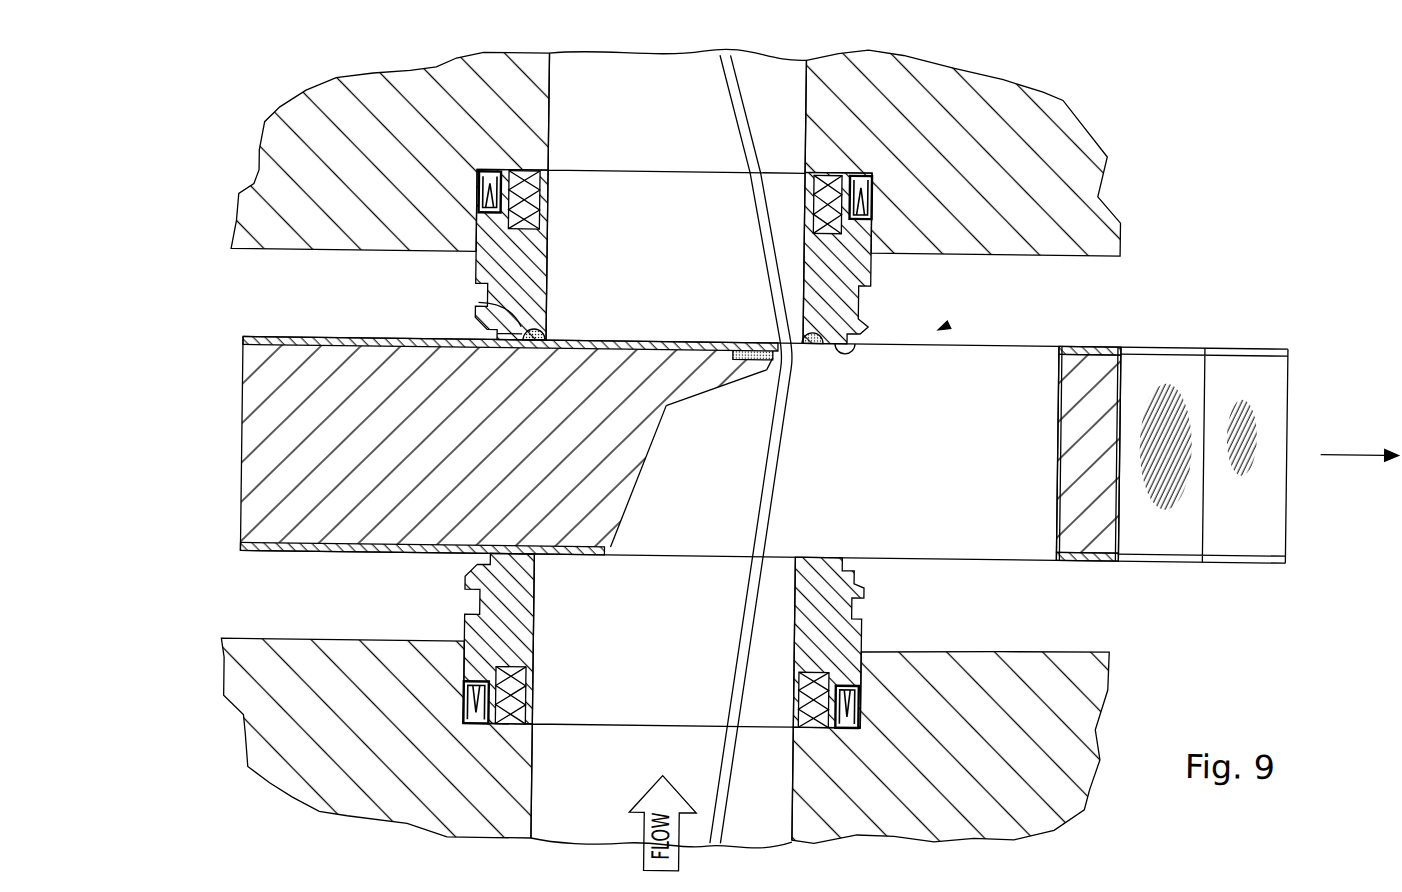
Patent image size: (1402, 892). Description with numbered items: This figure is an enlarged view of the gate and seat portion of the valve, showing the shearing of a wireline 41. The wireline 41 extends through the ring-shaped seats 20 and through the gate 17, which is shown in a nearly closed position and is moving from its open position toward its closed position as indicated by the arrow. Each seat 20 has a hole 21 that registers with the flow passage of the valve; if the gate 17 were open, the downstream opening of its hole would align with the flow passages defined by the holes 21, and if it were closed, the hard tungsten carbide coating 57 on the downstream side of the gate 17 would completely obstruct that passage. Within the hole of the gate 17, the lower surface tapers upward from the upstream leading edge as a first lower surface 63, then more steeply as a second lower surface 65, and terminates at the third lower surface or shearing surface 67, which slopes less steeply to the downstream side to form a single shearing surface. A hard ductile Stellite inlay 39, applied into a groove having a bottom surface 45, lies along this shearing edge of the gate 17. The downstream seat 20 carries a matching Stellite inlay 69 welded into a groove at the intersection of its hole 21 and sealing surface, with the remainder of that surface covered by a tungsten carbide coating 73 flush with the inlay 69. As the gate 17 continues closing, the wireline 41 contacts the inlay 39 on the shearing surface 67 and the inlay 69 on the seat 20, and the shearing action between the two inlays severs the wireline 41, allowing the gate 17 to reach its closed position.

The gate 17 is at (272, 453).
The valve seat 20 is at (866, 634).
The hole 21 is at (643, 662).
The inlay 39 is at (765, 340).
The wireline 41 is at (718, 92).
The bottom surface 45 is at (944, 326).
The coating 57 is at (257, 343).
The first lower surface 63 is at (657, 438).
The second lower surface 65 is at (717, 395).
The shearing surface 67 is at (767, 363).
The inlay 69 is at (823, 328).
The coating 73 is at (852, 352).